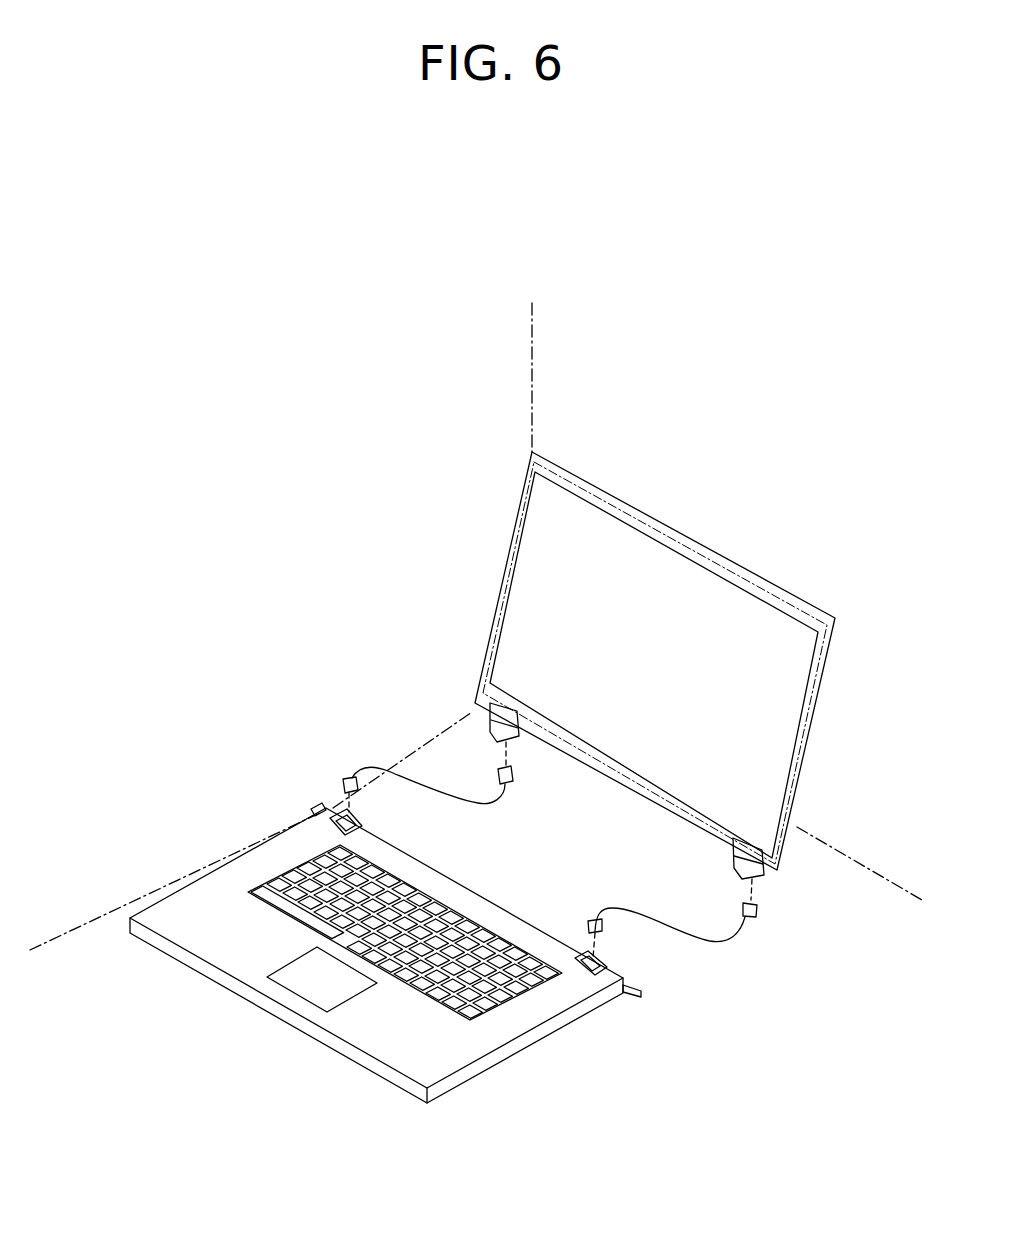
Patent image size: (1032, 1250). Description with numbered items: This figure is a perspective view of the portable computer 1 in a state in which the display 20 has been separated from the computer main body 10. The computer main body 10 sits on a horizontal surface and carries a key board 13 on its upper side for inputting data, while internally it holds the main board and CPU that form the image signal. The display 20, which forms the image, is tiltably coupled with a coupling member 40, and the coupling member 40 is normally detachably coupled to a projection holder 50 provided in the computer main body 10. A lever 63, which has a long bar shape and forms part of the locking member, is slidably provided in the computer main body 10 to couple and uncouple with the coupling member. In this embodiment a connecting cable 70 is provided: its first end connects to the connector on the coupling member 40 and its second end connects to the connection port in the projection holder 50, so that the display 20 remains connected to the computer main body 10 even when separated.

The portable computer 1 is at (278, 573).
The computer main body 10 is at (452, 1087).
The key board 13 is at (487, 1017).
The display 20 is at (822, 700).
The coupling member 40 is at (465, 707).
The projection holder 50 is at (330, 807).
The lever 63 is at (310, 810).
The connecting cable 70 is at (477, 805).